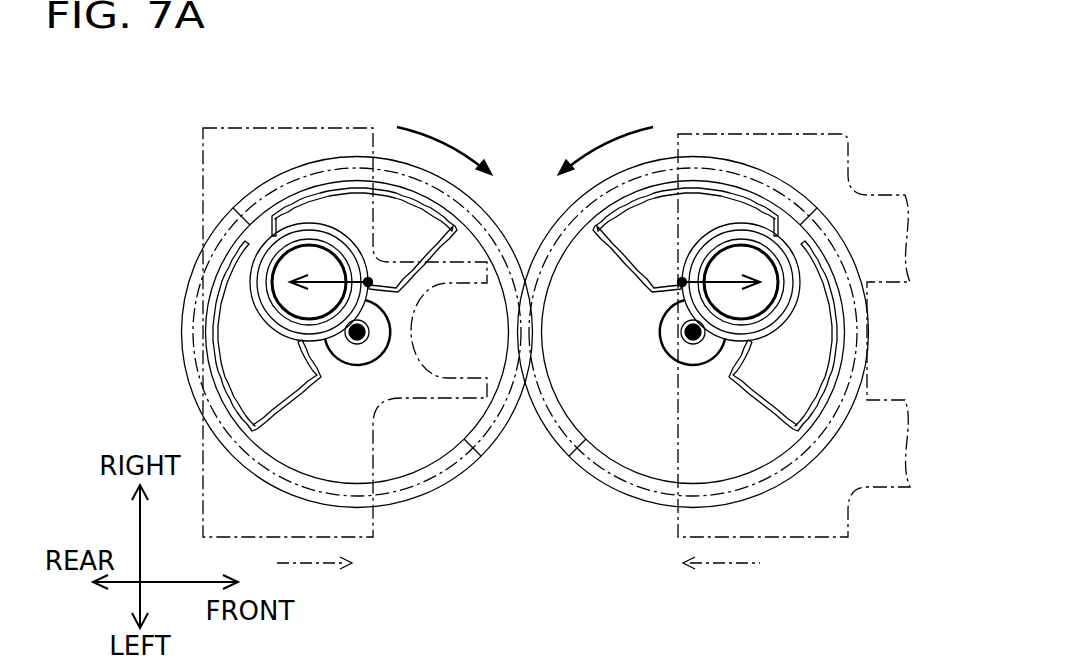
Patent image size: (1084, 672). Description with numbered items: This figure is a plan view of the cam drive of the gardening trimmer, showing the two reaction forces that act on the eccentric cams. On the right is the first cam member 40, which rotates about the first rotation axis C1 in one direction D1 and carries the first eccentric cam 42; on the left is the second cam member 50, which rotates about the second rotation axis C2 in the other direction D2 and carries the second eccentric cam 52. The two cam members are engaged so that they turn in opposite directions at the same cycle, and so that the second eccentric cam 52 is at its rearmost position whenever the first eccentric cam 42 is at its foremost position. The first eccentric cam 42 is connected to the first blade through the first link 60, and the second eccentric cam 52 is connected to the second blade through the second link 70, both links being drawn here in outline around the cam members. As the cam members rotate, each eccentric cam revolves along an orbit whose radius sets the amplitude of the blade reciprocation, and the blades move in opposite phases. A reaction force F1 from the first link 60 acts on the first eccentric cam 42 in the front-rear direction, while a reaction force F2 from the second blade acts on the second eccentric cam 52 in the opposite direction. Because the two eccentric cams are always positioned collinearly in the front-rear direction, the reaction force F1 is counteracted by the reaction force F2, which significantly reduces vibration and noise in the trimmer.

The second link 70 is at (260, 127).
The first link 60 is at (821, 134).
The second cam member 50 is at (442, 515).
The first cam member 40 is at (608, 515).
The second eccentric cam 52 is at (273, 318).
The first eccentric cam 42 is at (779, 317).
The second rotation axis C2 is at (364, 336).
The first rotation axis C1 is at (686, 336).
The reaction force F2 is at (316, 279).
The reaction force F1 is at (735, 278).
The another direction D2 is at (444, 137).
The one direction D1 is at (605, 137).